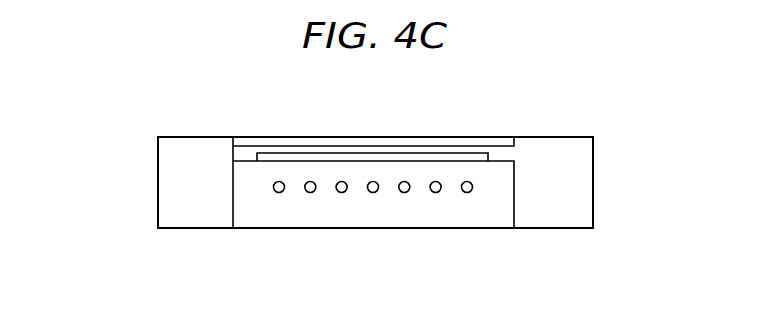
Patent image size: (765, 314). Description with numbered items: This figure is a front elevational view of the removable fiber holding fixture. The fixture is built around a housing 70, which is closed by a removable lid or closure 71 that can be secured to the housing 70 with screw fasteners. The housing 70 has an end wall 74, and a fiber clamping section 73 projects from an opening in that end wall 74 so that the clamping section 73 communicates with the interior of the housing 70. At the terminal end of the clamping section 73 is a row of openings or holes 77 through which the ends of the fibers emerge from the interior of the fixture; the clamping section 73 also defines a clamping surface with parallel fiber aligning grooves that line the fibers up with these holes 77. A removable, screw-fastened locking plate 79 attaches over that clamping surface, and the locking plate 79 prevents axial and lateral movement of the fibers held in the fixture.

The housing 70 is at (593, 183).
The removable lid or closure 71 is at (477, 137).
The fiber clamping section 73 is at (233, 207).
The end wall 74 is at (168, 150).
The openings or holes 77 is at (466, 193).
The locking plate 79 is at (489, 157).